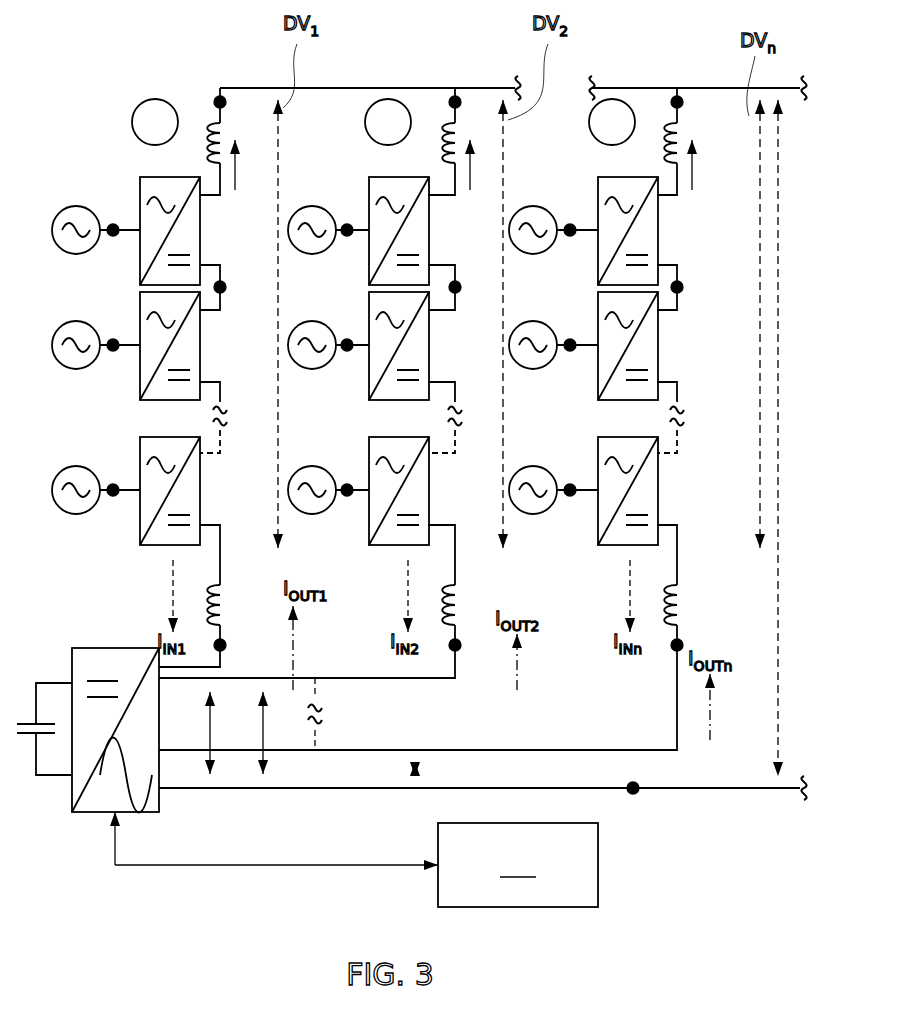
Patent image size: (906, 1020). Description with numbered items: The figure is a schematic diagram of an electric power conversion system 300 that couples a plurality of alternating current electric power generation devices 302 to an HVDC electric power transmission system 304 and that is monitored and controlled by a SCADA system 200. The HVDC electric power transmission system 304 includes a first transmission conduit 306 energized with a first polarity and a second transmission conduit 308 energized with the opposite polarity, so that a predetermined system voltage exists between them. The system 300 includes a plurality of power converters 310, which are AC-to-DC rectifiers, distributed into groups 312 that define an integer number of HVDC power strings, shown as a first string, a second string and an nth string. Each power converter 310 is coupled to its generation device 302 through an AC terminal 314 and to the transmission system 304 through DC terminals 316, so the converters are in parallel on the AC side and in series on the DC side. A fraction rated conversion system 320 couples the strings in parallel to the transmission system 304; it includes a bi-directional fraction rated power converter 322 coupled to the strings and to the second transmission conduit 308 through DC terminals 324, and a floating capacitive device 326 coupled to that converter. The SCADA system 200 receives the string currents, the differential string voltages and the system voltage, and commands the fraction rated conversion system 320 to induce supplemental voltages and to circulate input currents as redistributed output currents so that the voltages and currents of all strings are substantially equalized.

The SCADA system 200 is at (356, 859).
The electric power conversion system 300 is at (70, 120).
The alternating current electric power generation device 302 is at (59, 213).
The HVDC electric power transmission system 304 is at (797, 196).
The first transmission conduit 306 is at (625, 86).
The second transmission conduit 308 is at (692, 790).
The power converter 310 is at (140, 283).
The group of power converters 312 is at (226, 195).
The AC terminal 314 is at (114, 483).
The DC terminal 316 is at (222, 90).
The fraction rated conversion system 320 is at (92, 634).
The fraction rated power converter 322 is at (112, 646).
The DC terminal 324 is at (226, 644).
The capacitive device 326 is at (30, 743).